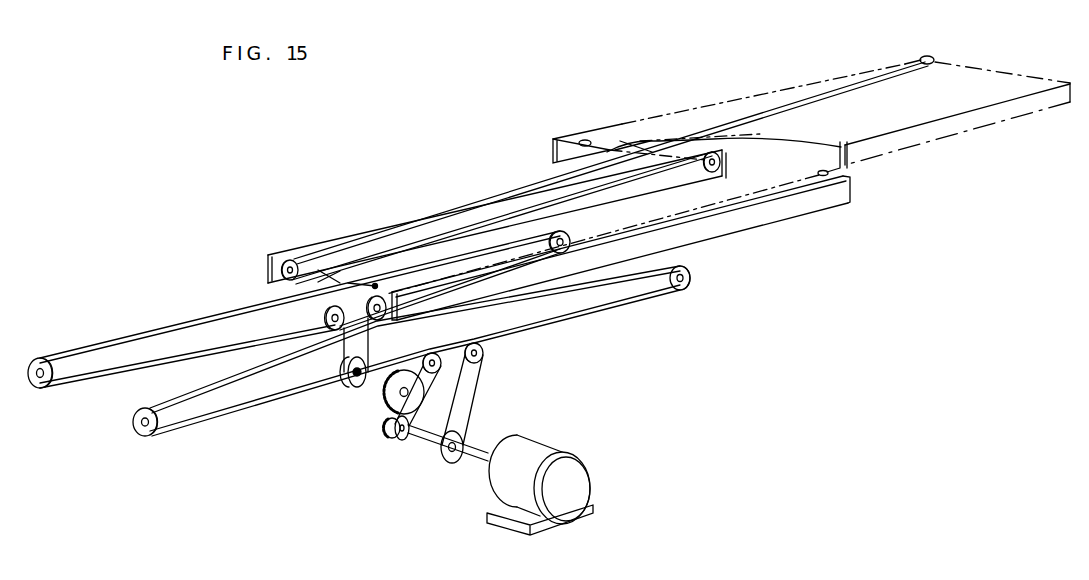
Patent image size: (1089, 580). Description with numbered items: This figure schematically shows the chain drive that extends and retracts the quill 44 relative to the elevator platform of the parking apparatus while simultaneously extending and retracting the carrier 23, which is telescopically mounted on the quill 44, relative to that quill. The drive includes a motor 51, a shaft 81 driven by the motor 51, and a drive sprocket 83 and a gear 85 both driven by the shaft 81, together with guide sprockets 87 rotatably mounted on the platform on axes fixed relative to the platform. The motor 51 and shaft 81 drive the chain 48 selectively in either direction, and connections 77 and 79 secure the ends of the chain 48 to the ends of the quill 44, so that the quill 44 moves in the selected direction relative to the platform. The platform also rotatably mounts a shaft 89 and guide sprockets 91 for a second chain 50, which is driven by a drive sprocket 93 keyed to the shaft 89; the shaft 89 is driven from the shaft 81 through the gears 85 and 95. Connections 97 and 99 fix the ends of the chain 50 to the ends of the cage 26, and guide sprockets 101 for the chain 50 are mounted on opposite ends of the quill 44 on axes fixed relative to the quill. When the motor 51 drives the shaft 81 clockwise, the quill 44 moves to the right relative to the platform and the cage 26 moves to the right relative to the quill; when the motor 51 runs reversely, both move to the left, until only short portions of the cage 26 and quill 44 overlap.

The carrier 23 is at (772, 79).
The cage 26 is at (697, 103).
The quill 44 is at (378, 226).
The chain 48 is at (253, 378).
The chain 50 is at (172, 325).
The motor 51 is at (527, 446).
The connection 77 is at (378, 286).
The connection 79 is at (847, 176).
The shaft 81 is at (470, 458).
The drive sprocket 83 is at (445, 461).
The gear 85 is at (402, 440).
The guide sprockets 87 is at (147, 408).
The shaft 89 is at (375, 390).
The guide sprockets 91 is at (41, 358).
The drive sprocket 93 is at (352, 384).
The gear 95 is at (393, 406).
The connection 97 is at (585, 138).
The connection 99 is at (936, 58).
The guide sprockets 101 is at (280, 266).